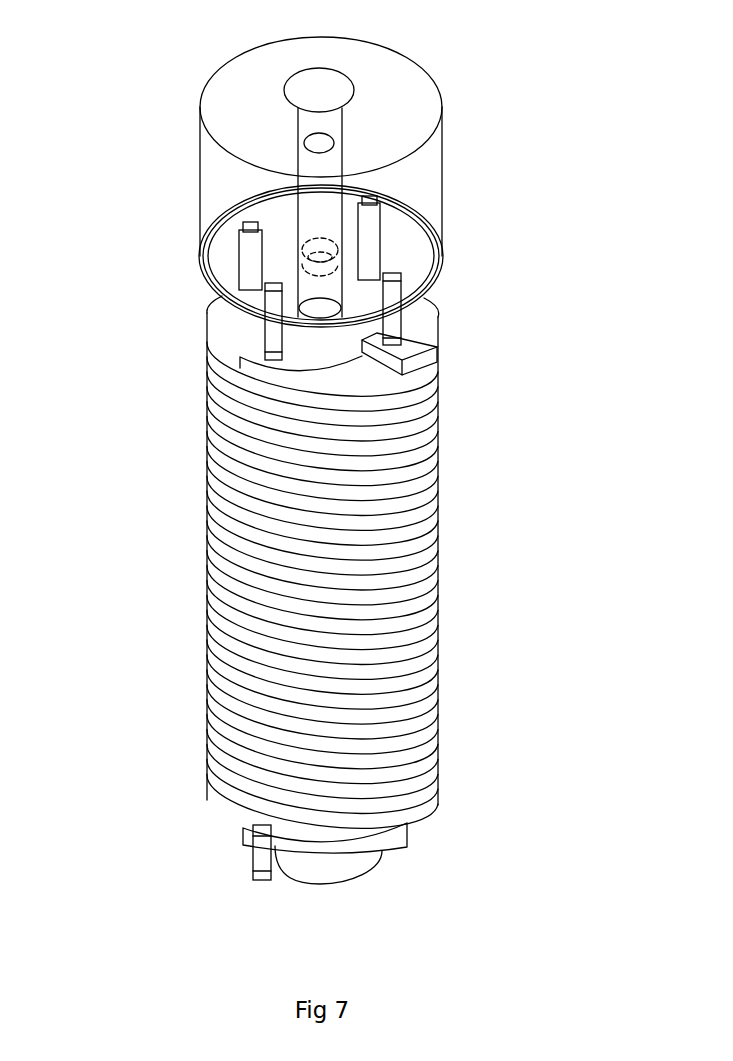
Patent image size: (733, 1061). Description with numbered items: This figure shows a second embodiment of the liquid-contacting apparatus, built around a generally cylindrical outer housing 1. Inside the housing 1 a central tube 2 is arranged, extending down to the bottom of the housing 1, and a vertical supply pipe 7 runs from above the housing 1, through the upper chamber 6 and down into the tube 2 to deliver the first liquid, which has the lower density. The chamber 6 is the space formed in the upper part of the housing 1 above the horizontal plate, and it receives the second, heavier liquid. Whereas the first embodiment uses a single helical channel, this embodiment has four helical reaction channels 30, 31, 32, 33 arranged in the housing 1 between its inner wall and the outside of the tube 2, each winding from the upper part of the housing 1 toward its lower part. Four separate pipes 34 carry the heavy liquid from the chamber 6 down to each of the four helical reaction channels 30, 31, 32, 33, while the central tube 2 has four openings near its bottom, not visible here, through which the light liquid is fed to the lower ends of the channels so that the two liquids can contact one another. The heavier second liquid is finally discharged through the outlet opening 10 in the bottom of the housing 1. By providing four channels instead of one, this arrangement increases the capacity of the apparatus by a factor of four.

The outer housing 1 is at (202, 190).
The central tube 2 is at (330, 862).
The chamber 6 is at (237, 180).
The vertical supply pipe 7 is at (325, 167).
The outlet opening 10 is at (253, 858).
The helical reaction channel 30 is at (437, 372).
The helical reaction channel 31 is at (420, 405).
The helical reaction channel 32 is at (427, 432).
The helical reaction channel 33 is at (425, 462).
The separate pipes 34 is at (262, 327).